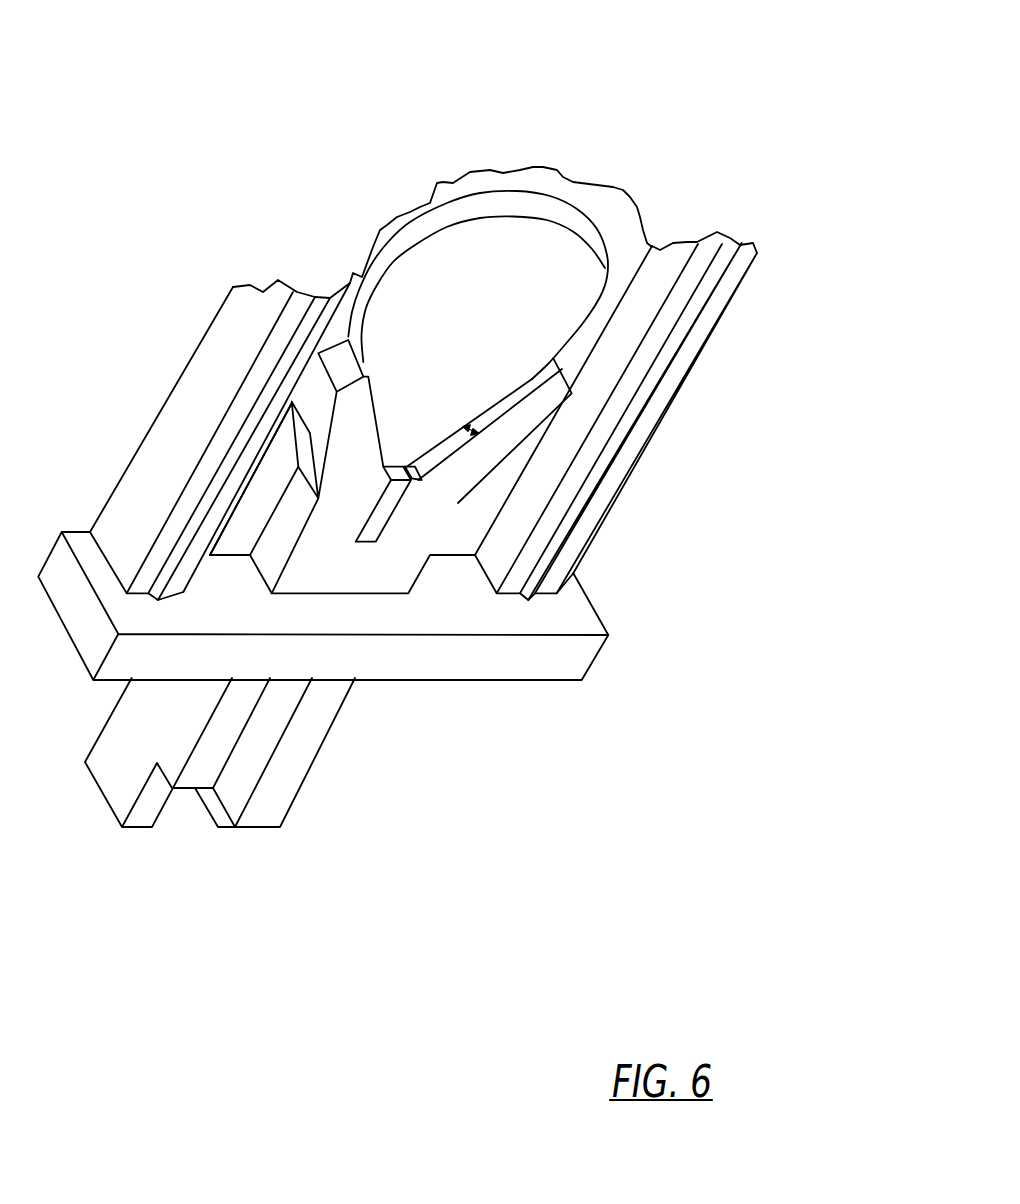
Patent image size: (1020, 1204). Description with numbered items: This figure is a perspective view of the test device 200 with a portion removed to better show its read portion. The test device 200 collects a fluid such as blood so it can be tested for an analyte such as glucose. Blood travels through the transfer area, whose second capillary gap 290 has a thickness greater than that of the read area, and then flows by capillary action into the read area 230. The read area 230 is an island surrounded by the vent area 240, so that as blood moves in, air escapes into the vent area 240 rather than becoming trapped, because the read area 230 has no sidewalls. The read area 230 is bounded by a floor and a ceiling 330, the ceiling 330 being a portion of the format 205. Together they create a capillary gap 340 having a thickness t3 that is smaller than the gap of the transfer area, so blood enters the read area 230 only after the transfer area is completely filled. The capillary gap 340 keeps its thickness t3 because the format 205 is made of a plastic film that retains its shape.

The test device 200 is at (353, 114).
The format 205 is at (85, 648).
The read area 230 is at (547, 287).
The vent area 240 is at (628, 231).
The second capillary gap 290 is at (384, 518).
The ceiling 330 is at (570, 322).
The capillary gap 340 is at (529, 382).
The thickness t3 is at (478, 433).